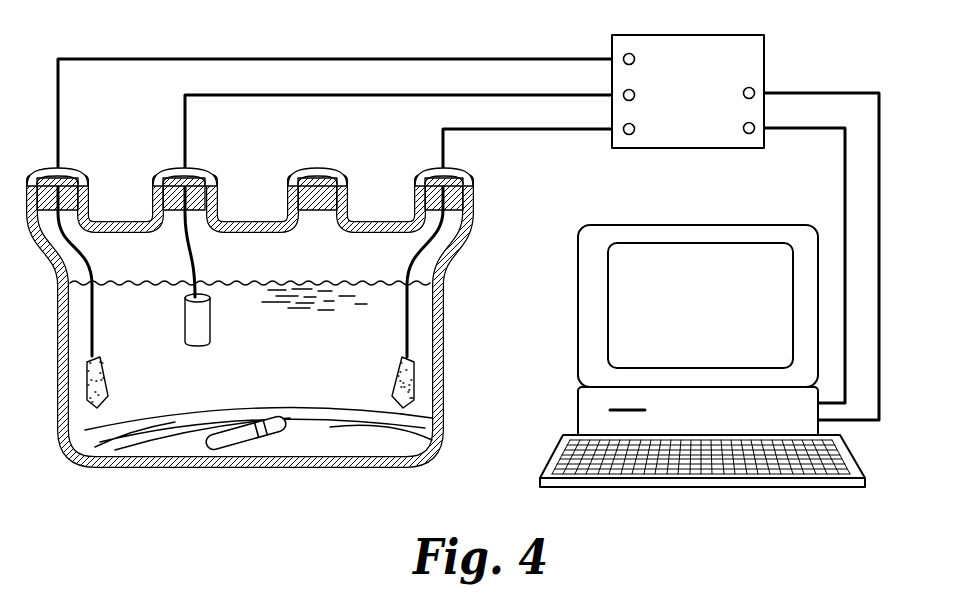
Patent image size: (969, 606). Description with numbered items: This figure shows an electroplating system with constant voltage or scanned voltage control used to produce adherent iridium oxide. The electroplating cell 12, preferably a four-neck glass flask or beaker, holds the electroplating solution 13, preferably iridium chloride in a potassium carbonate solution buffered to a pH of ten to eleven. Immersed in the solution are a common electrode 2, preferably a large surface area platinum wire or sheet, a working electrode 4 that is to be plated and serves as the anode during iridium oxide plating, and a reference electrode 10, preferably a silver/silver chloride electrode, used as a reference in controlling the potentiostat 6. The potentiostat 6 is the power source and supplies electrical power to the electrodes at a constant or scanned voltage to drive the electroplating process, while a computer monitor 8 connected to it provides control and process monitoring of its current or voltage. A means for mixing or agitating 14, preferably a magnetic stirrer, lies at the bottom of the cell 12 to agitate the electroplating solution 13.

The common electrode 2 is at (403, 385).
The working electrode 4 is at (102, 388).
The potentiostat 6 is at (699, 104).
The computer monitor 8 is at (709, 321).
The reference electrode 10 is at (211, 314).
The electroplating cell 12 is at (489, 322).
The electroplating solution 13 is at (322, 380).
The means for mixing or agitating 14 is at (247, 448).